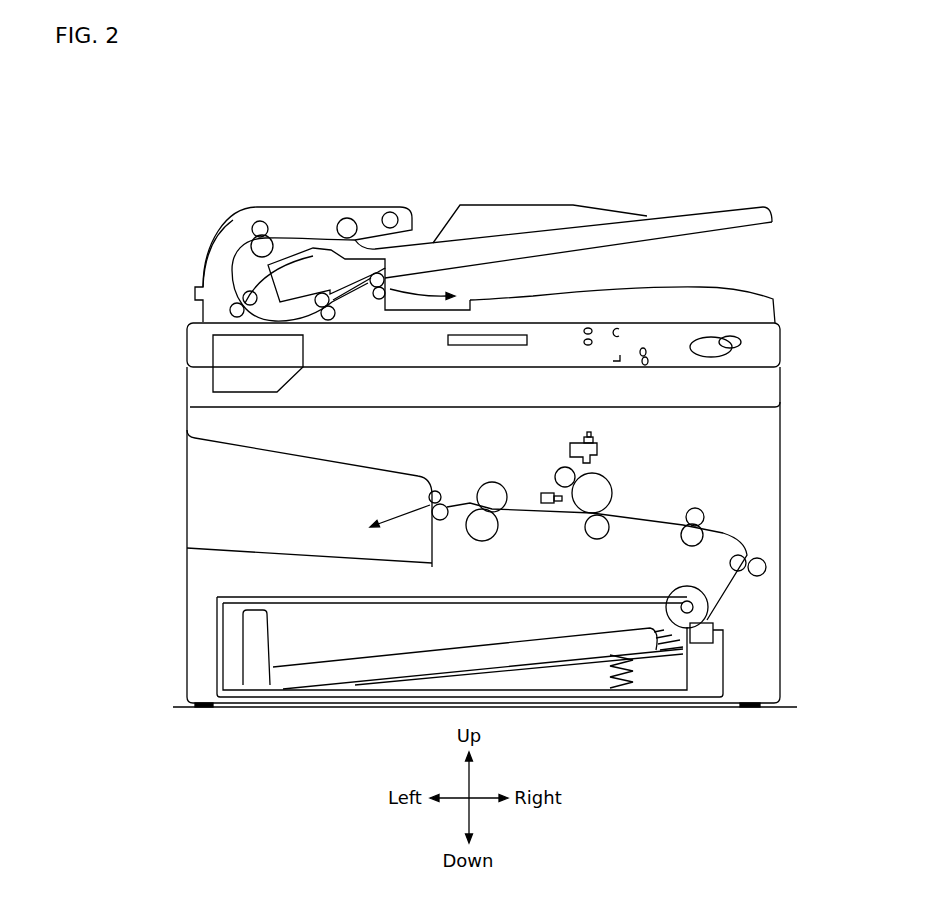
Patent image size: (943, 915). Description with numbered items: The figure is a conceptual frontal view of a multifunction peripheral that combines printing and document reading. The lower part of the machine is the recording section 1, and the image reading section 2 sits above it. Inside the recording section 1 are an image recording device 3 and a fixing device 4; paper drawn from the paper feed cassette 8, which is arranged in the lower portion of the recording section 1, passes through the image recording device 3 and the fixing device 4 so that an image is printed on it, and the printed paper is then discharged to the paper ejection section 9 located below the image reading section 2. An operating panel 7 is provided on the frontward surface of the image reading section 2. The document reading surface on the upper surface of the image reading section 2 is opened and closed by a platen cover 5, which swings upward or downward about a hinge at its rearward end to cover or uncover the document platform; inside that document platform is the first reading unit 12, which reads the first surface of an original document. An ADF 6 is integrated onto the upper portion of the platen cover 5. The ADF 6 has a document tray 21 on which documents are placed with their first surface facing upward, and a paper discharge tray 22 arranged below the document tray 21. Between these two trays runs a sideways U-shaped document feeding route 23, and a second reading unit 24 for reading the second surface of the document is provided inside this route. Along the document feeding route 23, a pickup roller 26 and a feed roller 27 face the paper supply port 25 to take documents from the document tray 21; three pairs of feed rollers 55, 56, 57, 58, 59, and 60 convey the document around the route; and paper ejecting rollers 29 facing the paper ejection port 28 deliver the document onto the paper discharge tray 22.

The recording section 1 is at (787, 466).
The image reading section 2 is at (496, 342).
The image recording device 3 is at (612, 462).
The fixing device 4 is at (466, 493).
The platen cover 5 is at (702, 287).
The ADF (automatic document feeding section) 6 is at (472, 259).
The operating panel 7 is at (557, 343).
The paper feed cassette 8 is at (265, 597).
The paper ejection section 9 is at (212, 548).
The first reading unit 12 is at (295, 378).
The document tray 21 is at (580, 220).
The paper discharge tray 22 is at (472, 303).
The document feeding route 23 is at (226, 260).
The second reading unit 24 is at (313, 250).
The paper supply port 25 is at (410, 240).
The pickup roller 26 is at (393, 212).
The feed roller 27 is at (349, 218).
The paper ejection port 28 is at (386, 292).
The paper ejecting rollers 29 is at (374, 288).
The feed roller 55 is at (240, 244).
The feed roller 56 is at (258, 222).
The feed roller 57 is at (273, 279).
The feed roller 58 is at (238, 318).
The feed roller 59 is at (321, 308).
The feed roller 60 is at (333, 317).